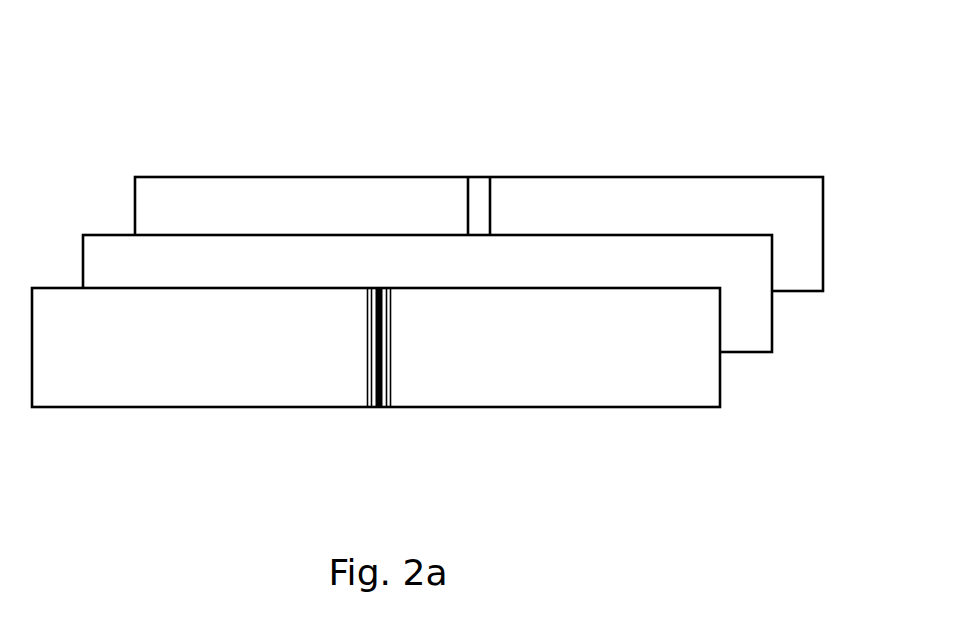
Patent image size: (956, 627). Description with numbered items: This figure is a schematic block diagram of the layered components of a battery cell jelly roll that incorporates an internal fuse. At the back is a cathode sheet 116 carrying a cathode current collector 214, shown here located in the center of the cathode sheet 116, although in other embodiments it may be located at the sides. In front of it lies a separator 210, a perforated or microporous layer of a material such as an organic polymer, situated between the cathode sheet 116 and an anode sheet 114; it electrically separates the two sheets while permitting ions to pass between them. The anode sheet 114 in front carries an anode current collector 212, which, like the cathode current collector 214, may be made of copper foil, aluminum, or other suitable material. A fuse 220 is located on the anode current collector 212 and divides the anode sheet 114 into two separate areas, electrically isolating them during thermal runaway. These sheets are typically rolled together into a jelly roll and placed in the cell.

The cathode sheet 116 is at (709, 225).
The cathode current collector 214 is at (486, 177).
The separator 210 is at (627, 283).
The anode sheet 114 is at (561, 351).
The anode current collector 212 is at (390, 407).
The fuse 220 is at (377, 407).